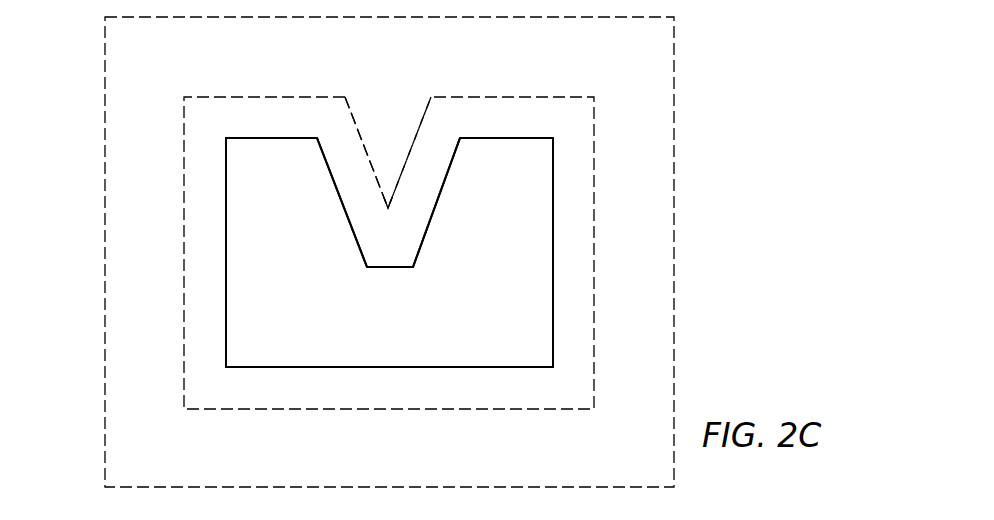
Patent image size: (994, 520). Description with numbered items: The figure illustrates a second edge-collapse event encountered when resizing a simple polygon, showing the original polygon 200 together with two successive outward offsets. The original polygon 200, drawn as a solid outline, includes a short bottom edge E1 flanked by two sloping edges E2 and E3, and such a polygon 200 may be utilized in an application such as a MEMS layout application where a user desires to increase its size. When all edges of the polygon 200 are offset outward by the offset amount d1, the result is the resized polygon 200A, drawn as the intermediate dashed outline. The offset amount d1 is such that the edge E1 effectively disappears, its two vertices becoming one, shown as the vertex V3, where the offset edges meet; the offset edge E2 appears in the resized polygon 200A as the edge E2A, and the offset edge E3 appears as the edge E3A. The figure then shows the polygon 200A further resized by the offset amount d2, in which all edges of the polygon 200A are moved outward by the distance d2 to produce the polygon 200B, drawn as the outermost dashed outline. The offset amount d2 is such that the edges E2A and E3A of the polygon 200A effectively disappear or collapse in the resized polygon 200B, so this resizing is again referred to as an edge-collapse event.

The simple polygon 200 is at (485, 129).
The resized polygon 200A is at (243, 90).
The resized polygon 200B is at (96, 272).
The offset amount d1 is at (288, 162).
The offset amount d2 is at (550, 24).
The edge E1 is at (394, 266).
The edge E2 is at (346, 208).
The edge E3 is at (444, 186).
The offset edge E2A is at (354, 115).
The offset edge E3A is at (425, 115).
The vertex V3 is at (390, 209).